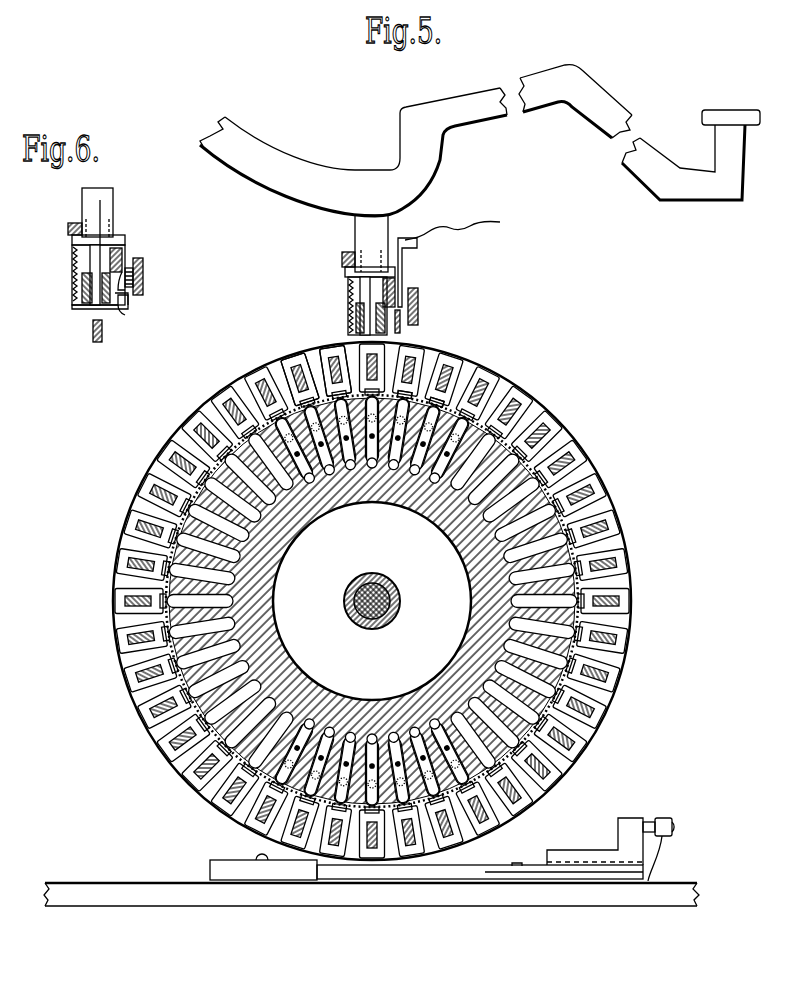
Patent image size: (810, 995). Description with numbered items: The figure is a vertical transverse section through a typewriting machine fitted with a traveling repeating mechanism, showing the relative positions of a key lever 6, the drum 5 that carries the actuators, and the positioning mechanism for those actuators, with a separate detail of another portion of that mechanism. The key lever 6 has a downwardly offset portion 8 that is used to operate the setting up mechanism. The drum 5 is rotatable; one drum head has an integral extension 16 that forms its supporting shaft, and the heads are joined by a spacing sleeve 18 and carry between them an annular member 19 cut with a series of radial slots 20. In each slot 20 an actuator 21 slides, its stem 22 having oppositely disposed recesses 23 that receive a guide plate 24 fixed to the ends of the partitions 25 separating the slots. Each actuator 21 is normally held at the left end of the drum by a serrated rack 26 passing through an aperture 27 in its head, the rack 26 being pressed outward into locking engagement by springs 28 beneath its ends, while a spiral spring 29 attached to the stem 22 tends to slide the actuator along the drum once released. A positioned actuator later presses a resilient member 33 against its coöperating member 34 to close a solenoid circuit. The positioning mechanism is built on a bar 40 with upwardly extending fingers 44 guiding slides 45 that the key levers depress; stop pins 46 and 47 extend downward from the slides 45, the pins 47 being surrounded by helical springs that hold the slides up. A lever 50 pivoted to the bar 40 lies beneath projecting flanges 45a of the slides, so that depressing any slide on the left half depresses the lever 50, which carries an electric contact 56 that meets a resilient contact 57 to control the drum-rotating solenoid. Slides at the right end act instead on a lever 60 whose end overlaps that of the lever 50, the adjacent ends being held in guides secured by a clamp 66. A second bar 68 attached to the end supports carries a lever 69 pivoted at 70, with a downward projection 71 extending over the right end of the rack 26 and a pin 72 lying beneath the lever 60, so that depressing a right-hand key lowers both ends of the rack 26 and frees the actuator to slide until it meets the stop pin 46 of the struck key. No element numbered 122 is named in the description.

In FIG. 5, the drum 5 is at (616, 512).
In FIG. 5, the key lever 6 is at (603, 97).
In FIG. 5, the downwardly offset portion 8 is at (418, 184).
In FIG. 5, the integral extension 16 is at (347, 613).
In FIG. 5, the spacing sleeve 18 is at (395, 599).
In FIG. 5, the annular member 19 is at (372, 601).
In FIG. 5, the radial slot 20 is at (380, 590).
In FIG. 5, the actuator 21 is at (372, 591).
In FIG. 5, the stem 22 is at (434, 424).
In FIG. 5, the recess 23 is at (427, 574).
In FIG. 5, the guide plate 24 is at (428, 593).
In FIG. 5, the partition 25 is at (340, 601).
In FIG. 5, the serrated rack 26 is at (394, 559).
In FIG. 6, the serrated rack 26 is at (101, 341).
In FIG. 5, the aperture 27 is at (454, 360).
In FIG. 5, the spring 28 is at (565, 571).
In FIG. 5, the spiral spring 29 is at (372, 601).
In FIG. 5, the slot 122 is at (372, 601).
In FIG. 5, the resilient member 33 is at (340, 870).
In FIG. 5, the coöperating member 34 is at (363, 872).
In FIG. 6, the bar 40 is at (78, 306).
In FIG. 6, the finger 44 is at (101, 232).
In FIG. 5, the positioning slide 45 is at (357, 233).
In FIG. 6, the positioning slide 45 is at (110, 198).
In FIG. 6, the projecting flange 45a is at (118, 247).
In FIG. 5, the stop pin 46 is at (368, 289).
In FIG. 6, the stop pin 46 is at (78, 256).
In FIG. 5, the stop pin 47 is at (352, 305).
In FIG. 6, the stop pin 47 is at (75, 270).
In FIG. 5, the lever 50 is at (393, 290).
In FIG. 5, the electric contact 56 is at (405, 256).
In FIG. 5, the resilient contact 57 is at (418, 238).
In FIG. 6, the lever 60 is at (122, 260).
In FIG. 5, the clamp 66 is at (402, 325).
In FIG. 5, the bar 68 is at (419, 297).
In FIG. 6, the bar 68 is at (145, 280).
In FIG. 6, the lever 69 is at (144, 270).
In FIG. 6, the pivot 70 is at (145, 289).
In FIG. 6, the downward projection 71 is at (121, 310).
In FIG. 6, the pin 72 is at (128, 300).